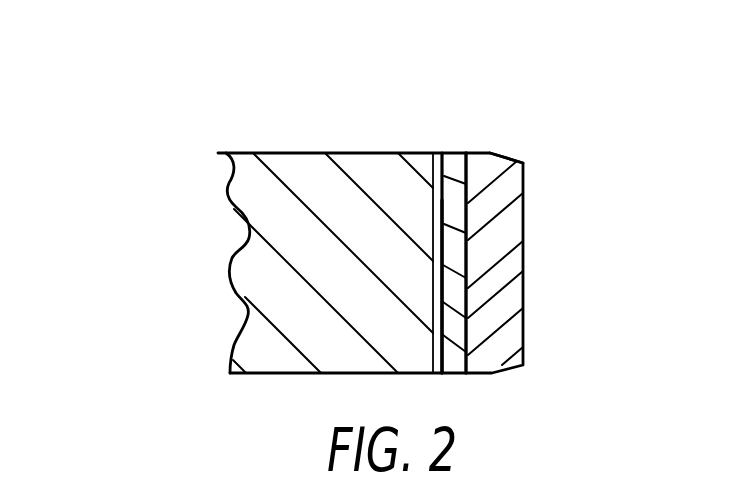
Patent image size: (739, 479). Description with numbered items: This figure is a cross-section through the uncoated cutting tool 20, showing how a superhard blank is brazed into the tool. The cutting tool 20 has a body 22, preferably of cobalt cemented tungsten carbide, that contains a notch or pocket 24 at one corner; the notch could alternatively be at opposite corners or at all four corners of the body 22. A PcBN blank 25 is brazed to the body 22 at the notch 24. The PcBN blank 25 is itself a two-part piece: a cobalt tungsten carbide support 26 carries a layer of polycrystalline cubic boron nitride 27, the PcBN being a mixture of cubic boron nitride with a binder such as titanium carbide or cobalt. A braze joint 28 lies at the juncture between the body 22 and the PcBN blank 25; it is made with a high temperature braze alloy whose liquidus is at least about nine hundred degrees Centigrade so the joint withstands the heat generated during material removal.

The cutting tool 20 is at (178, 151).
The body 22 is at (267, 288).
The notch 24 is at (432, 201).
The PcBN blank 25 is at (507, 160).
The cobalt tungsten carbide support 26 is at (456, 210).
The layer of polycrystalline cubic boron nitride 27 is at (510, 245).
The braze joint 28 is at (436, 334).